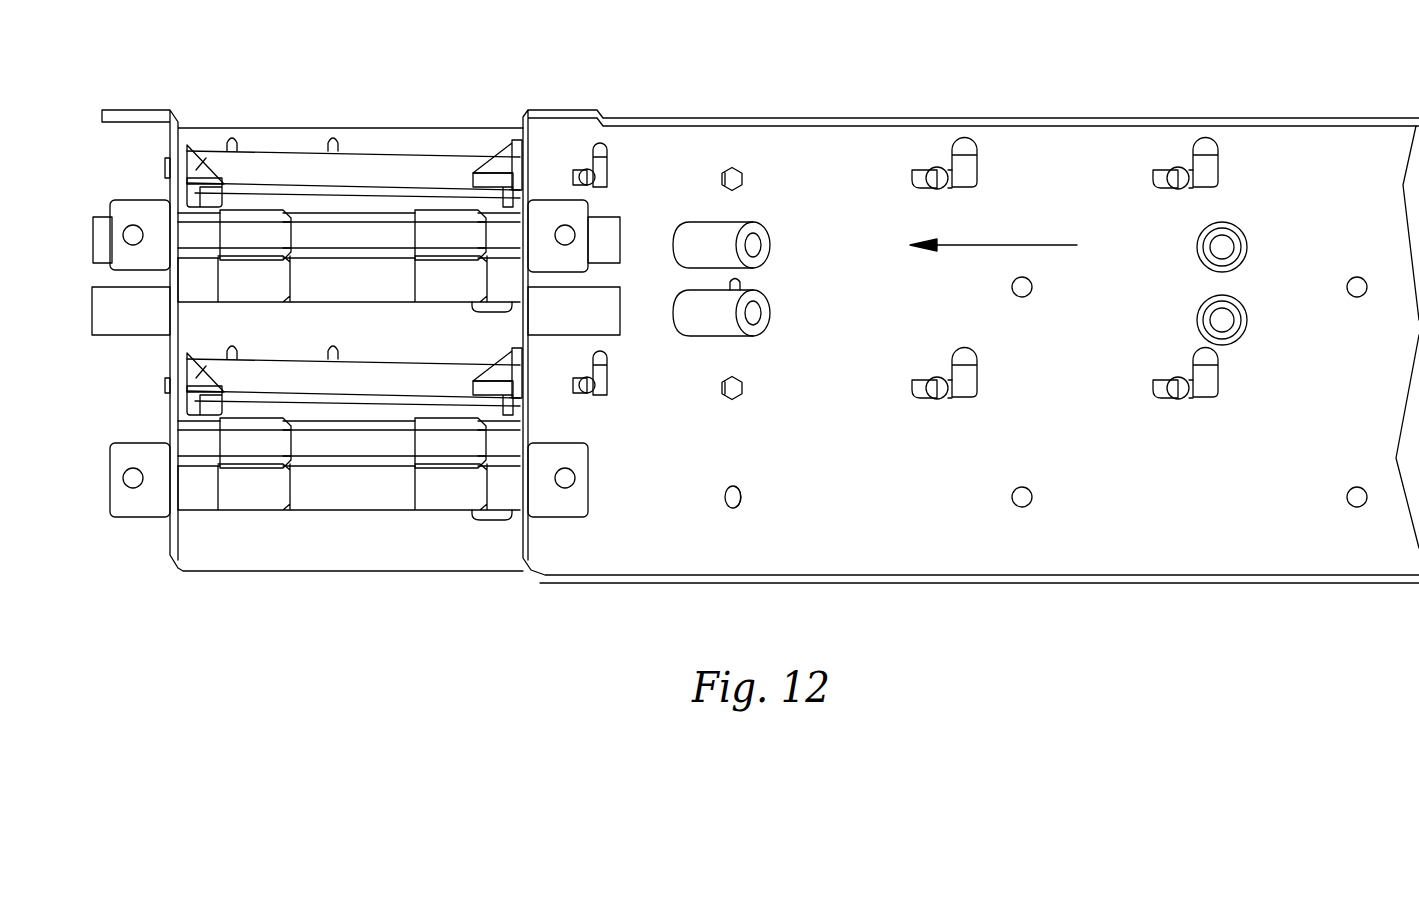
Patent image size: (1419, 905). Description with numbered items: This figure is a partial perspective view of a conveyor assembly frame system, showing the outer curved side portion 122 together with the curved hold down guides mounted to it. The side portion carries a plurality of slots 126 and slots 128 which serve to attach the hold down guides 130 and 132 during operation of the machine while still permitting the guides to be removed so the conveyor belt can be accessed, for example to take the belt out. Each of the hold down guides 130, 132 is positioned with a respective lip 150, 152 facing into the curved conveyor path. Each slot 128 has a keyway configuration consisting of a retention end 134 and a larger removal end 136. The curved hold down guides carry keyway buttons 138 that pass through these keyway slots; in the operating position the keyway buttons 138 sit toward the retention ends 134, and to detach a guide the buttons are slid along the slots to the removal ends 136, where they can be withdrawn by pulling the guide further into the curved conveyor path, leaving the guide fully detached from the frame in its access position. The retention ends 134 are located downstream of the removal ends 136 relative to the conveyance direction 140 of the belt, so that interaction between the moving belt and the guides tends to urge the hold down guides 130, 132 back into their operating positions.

The outer curved side portion 122 is at (333, 545).
The slots 126 is at (343, 153).
The slots 128 is at (961, 229).
The hold down guide 130 is at (213, 155).
The hold down guide 132 is at (503, 172).
The retention end 134 is at (912, 180).
The removal end 136 is at (970, 147).
The keyway button 138 is at (935, 175).
The conveyance direction 140 is at (1017, 245).
The lip 150 is at (228, 196).
The lip 152 is at (473, 197).